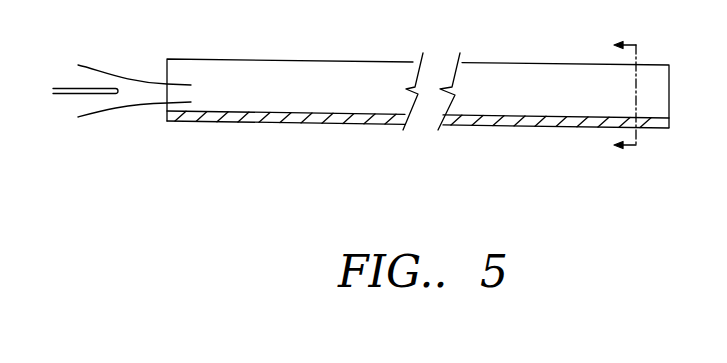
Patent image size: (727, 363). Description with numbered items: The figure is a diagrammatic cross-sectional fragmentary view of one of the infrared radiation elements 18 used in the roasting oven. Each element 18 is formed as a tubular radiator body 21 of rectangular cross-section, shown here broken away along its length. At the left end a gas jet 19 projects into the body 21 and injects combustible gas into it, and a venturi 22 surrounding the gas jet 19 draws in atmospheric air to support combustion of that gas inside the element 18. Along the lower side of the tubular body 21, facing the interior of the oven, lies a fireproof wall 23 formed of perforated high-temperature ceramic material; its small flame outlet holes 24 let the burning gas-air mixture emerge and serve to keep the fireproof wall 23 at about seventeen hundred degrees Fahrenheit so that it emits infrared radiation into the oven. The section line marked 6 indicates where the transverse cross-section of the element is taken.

The infrared radiation element 18 is at (362, 59).
The gas jet 19 is at (75, 94).
The tubular radiator body 21 is at (497, 104).
The venturi 22 is at (147, 104).
The fireproof wall 23 is at (312, 123).
The flame outlet holes 24 is at (478, 126).
The section line 6- 6 is at (614, 94).